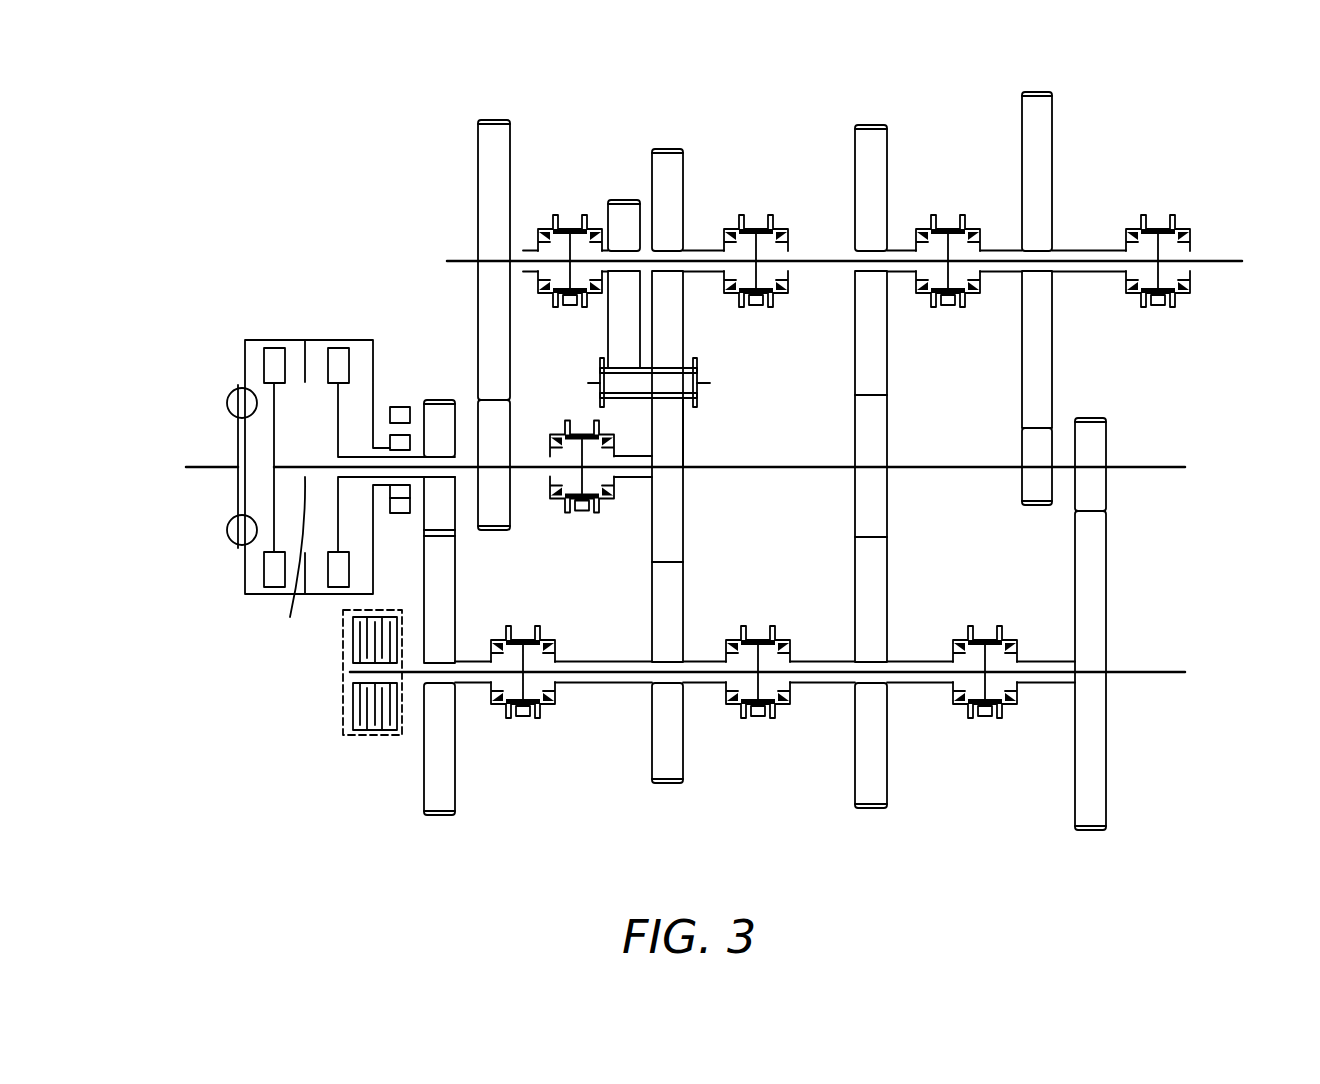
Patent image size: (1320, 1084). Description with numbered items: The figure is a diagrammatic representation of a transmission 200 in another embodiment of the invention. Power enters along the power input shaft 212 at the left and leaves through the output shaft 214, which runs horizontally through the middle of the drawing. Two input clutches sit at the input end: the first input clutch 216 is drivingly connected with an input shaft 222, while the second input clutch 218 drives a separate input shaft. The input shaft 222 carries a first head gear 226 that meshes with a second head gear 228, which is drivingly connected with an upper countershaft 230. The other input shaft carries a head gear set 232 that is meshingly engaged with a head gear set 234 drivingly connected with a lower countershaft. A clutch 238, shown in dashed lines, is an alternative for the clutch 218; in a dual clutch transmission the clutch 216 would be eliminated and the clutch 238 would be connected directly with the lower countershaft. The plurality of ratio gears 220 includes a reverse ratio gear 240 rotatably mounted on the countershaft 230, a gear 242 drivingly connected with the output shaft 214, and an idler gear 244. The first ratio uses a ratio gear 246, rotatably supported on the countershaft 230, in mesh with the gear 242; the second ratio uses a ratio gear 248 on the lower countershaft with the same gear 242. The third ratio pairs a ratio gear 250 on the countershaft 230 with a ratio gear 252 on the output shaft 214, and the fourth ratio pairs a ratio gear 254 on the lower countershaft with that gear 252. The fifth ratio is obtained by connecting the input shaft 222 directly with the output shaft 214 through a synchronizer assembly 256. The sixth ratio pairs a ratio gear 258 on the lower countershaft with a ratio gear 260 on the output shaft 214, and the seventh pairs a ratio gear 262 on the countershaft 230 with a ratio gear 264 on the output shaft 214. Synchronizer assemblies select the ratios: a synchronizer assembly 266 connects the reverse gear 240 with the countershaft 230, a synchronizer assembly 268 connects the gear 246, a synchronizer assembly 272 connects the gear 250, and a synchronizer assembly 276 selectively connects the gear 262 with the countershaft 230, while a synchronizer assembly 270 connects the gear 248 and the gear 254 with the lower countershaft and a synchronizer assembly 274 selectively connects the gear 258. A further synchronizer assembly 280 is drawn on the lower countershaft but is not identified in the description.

The transmission 200 is at (551, 119).
The power input shaft 212 is at (211, 459).
The output shaft 214 is at (1157, 471).
The first input clutch 216 is at (275, 341).
The second input clutch 218 is at (343, 341).
The ratio gears 220 is at (627, 811).
The input shaft 222 is at (296, 563).
The first head gear 226 is at (514, 425).
The second head gear 228 is at (477, 158).
The countershaft 230 is at (462, 259).
The head gear set 232 is at (432, 398).
The head gear set 234 is at (456, 781).
The clutch 238 is at (351, 737).
The reverse ratio gear 240 is at (621, 199).
The gear 242 is at (685, 448).
The idler gear 244 is at (701, 383).
The ratio gear 246 is at (683, 150).
The ratio gear 248 is at (685, 746).
The ratio gear 250 is at (889, 380).
The ratio gear 252 is at (889, 438).
The ratio gear 254 is at (889, 746).
The synchronizer assembly 256 is at (582, 515).
The ratio gear 258 is at (1108, 790).
The ratio gear 260 is at (1108, 440).
The ratio gear 262 is at (1053, 135).
The ratio gear 264 is at (1019, 501).
The synchronizer assembly 266 is at (573, 212).
The synchronizer assembly 268 is at (807, 211).
The synchronizer assembly 270 is at (761, 626).
The synchronizer assembly 272 is at (950, 211).
The synchronizer assembly 274 is at (987, 626).
The synchronizer assembly 276 is at (1187, 211).
The synchronizer 280 is at (541, 590).